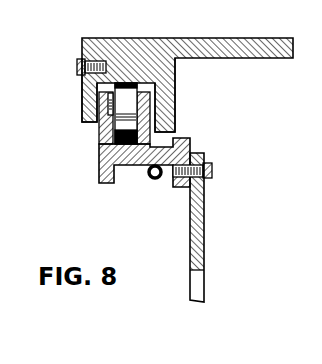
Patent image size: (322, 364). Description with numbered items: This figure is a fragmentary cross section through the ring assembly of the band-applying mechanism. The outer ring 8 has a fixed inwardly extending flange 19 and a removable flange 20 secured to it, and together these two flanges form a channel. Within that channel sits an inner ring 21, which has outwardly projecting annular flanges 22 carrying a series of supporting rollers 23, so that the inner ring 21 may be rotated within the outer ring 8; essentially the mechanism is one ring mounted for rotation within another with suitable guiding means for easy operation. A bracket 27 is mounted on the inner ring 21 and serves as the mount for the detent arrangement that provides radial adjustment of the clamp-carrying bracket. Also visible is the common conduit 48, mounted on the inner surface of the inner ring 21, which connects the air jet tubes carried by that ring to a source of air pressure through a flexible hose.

The ring 8 is at (202, 44).
The fixed inwardly extending flange 19 is at (165, 90).
The removable flange 20 is at (82, 100).
The inner ring 21 is at (116, 152).
The outwardly projecting annular flanges 22 is at (105, 137).
The supporting rollers 23 is at (113, 122).
The bracket 27 is at (200, 215).
The common conduit 48 is at (157, 181).